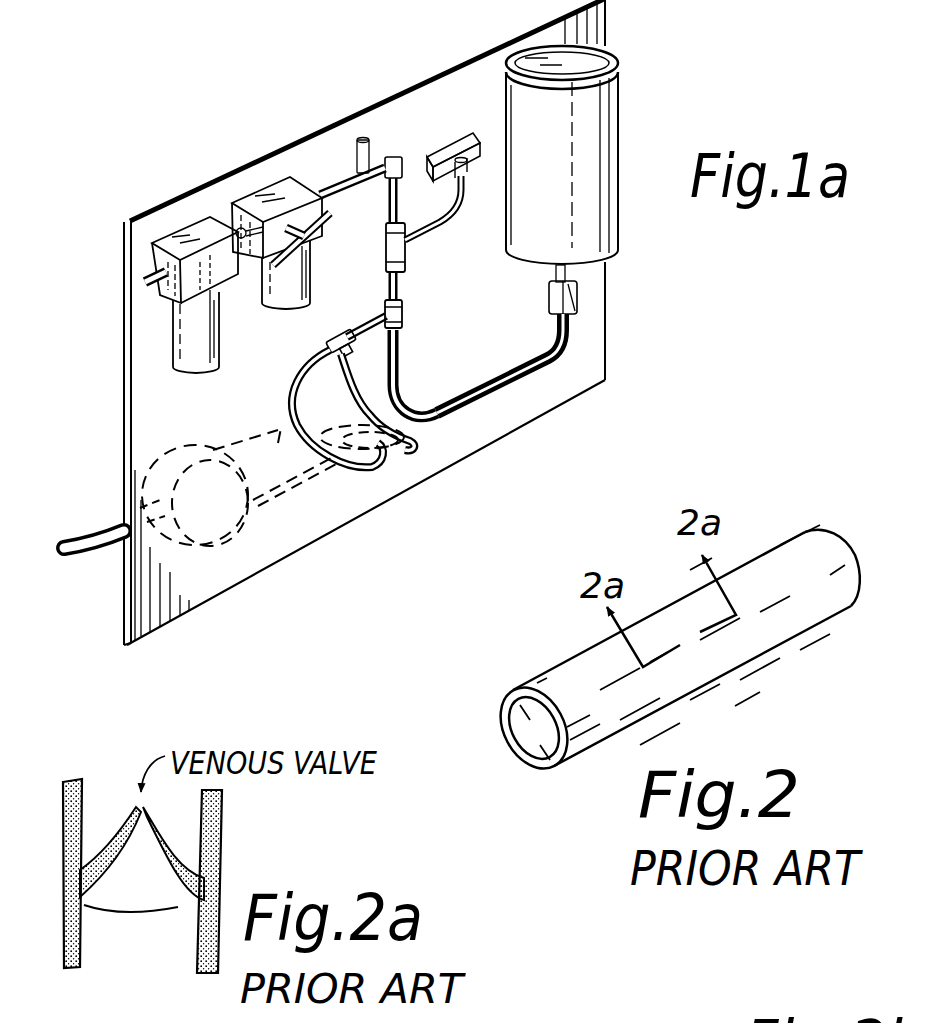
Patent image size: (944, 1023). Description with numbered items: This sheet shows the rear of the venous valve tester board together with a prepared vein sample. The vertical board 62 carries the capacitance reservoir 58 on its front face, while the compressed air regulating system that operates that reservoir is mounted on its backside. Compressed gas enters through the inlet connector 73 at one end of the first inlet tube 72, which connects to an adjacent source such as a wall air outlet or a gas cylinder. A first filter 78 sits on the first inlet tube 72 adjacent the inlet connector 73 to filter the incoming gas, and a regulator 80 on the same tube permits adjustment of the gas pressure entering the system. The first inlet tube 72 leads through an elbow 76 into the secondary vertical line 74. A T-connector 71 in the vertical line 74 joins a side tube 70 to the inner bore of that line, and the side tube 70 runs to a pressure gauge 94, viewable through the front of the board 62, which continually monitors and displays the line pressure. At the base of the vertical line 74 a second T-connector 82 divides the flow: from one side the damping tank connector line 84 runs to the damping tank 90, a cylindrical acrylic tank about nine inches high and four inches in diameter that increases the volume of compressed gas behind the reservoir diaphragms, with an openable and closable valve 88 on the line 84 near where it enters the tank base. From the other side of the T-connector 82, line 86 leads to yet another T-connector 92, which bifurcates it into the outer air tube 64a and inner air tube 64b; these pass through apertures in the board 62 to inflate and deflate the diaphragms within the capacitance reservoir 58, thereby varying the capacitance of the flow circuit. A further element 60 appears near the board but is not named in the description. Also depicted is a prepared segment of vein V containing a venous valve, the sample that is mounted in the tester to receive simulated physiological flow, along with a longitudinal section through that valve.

In FIG. 1A, the capacitance reservoir 58 is at (224, 521).
In FIG. 1A, the vessel conduit tube 60 is at (105, 555).
In FIG. 1A, the vertical board 62 is at (343, 130).
In FIG. 1A, the outer air tube 64a is at (410, 437).
In FIG. 1A, the inner air tube 64b is at (417, 427).
In FIG. 1A, the side tube 70 is at (447, 222).
In FIG. 1A, the T-connector 71 is at (386, 244).
In FIG. 1A, the first inlet tube 72 is at (340, 180).
In FIG. 1A, the inlet connector 73 is at (150, 250).
In FIG. 1A, the secondary vertical line 74 is at (400, 185).
In FIG. 1A, the elbow 76 is at (391, 157).
In FIG. 1A, the first filter 78 is at (173, 358).
In FIG. 1A, the regulator 80 is at (257, 304).
In FIG. 1A, the second T-connector 82 is at (402, 307).
In FIG. 1A, the damping tank connector line 84 is at (523, 382).
In FIG. 1A, the line 86 is at (398, 362).
In FIG. 1A, the openable and closable valve 88 is at (580, 293).
In FIG. 1A, the damping tank 90 is at (554, 105).
In FIG. 1A, the T-connector 92 is at (330, 333).
In FIG. 1A, the pressure gauge 94 is at (478, 150).
In FIG. 2A, the vein V is at (226, 857).